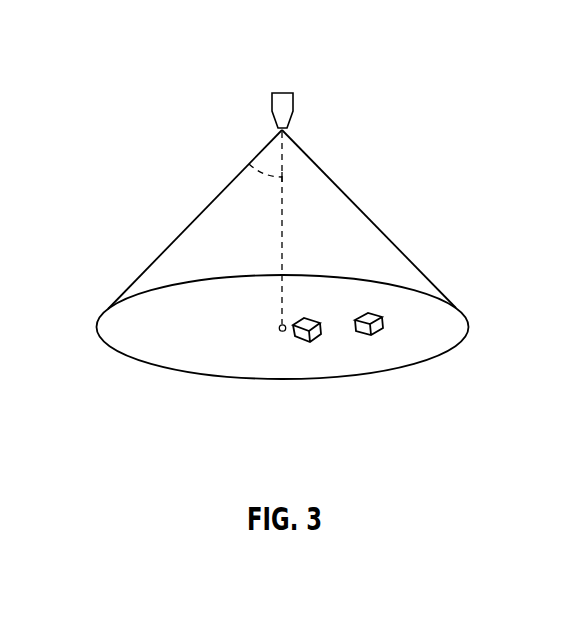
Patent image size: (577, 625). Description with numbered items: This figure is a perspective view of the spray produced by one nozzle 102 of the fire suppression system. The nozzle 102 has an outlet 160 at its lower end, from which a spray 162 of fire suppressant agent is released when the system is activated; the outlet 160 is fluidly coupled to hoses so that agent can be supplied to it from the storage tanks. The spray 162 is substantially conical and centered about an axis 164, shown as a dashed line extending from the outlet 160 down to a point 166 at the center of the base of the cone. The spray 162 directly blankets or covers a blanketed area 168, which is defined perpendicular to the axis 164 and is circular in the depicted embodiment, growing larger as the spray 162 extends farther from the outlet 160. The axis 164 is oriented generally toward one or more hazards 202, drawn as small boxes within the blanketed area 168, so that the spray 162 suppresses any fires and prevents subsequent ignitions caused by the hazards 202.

The nozzle 102 is at (283, 101).
The outlet 160 is at (282, 131).
The spray 162 is at (367, 212).
The axis 164 is at (249, 164).
The point 166 is at (283, 331).
The blanketed area 168 is at (458, 326).
The hazard 202 is at (306, 320).